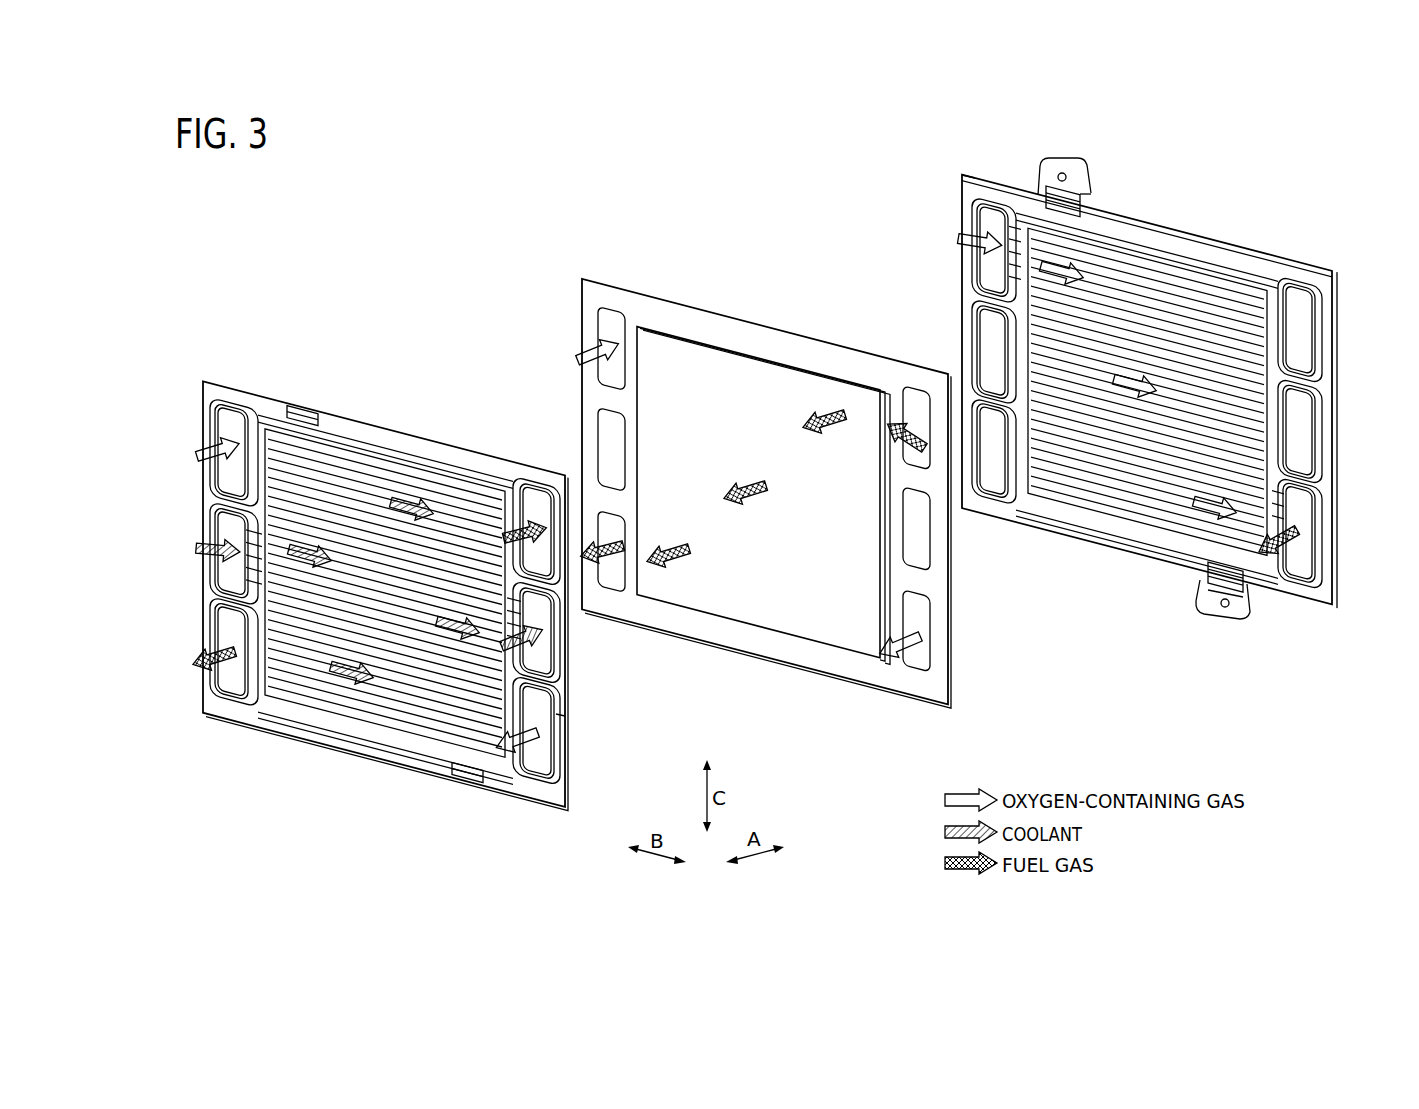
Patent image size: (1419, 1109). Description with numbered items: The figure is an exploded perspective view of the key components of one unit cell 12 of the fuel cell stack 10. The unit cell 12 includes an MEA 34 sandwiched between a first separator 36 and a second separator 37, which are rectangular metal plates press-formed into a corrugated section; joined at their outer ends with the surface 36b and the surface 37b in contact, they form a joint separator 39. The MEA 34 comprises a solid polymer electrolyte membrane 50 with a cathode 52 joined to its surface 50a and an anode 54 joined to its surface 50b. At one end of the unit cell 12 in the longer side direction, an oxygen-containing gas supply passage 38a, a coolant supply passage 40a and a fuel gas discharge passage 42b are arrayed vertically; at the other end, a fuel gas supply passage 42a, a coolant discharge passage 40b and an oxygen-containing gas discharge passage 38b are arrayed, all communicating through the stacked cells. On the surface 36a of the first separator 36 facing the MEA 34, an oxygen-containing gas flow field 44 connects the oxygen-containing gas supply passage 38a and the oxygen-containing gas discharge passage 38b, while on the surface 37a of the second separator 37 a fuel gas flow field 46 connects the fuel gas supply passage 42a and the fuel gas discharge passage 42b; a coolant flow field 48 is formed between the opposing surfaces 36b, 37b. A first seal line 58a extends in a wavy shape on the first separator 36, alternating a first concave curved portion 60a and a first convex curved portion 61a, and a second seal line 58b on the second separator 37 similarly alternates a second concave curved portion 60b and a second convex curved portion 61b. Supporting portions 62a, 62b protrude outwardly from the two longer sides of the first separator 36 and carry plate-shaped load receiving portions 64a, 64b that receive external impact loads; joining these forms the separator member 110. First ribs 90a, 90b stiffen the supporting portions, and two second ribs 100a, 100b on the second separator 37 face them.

The fuel cell stack 10 is at (344, 208).
The unit cell 12 is at (739, 236).
The MEA 34 is at (583, 280).
The first separator 36 is at (1238, 262).
The second separator 37 is at (205, 390).
The joint separator 39 is at (1318, 206).
The oxygen-containing gas supply passage 38a is at (222, 425).
The oxygen-containing gas discharge passage 38b is at (548, 770).
The coolant supply passage 40a is at (222, 532).
The coolant discharge passage 40b is at (548, 655).
The fuel gas supply passage 42a is at (537, 498).
The fuel gas discharge passage 42b is at (222, 636).
The oxygen-containing gas flow field 44 is at (1102, 490).
The fuel gas flow field 46 is at (415, 486).
The coolant flow field 48 is at (318, 705).
The solid polymer electrolyte membrane 50 is at (728, 330).
The surface of the solid polymer electrolyte membrane 50a is at (905, 676).
The surface of the solid polymer electrolyte membrane 50b is at (876, 676).
The cathode 52 is at (780, 358).
The anode 54 is at (680, 352).
The first seal line 58a is at (1215, 179).
The second seal line 58b is at (420, 345).
The first concave curved portion 60a is at (1125, 232).
The second concave curved portion 60b is at (344, 428).
The first convex curved portion 61a is at (1195, 255).
The second convex curved portion 61b is at (402, 450).
The supporting portion 62a is at (1090, 194).
The supporting portion 62b is at (1200, 576).
The load receiving portion 64a is at (1042, 170).
The load receiving portion 64b is at (1226, 618).
The first rib 90a is at (1058, 195).
The first rib 90b is at (1212, 592).
The second rib 100a is at (298, 404).
The second rib 100b is at (466, 790).
The separator member 110 is at (965, 180).
The surface of the first separator 36a is at (1310, 478).
The surface of the first separator 36b is at (1310, 500).
The surface of the second separator 37a is at (556, 714).
The surface of the second separator 37b is at (552, 682).